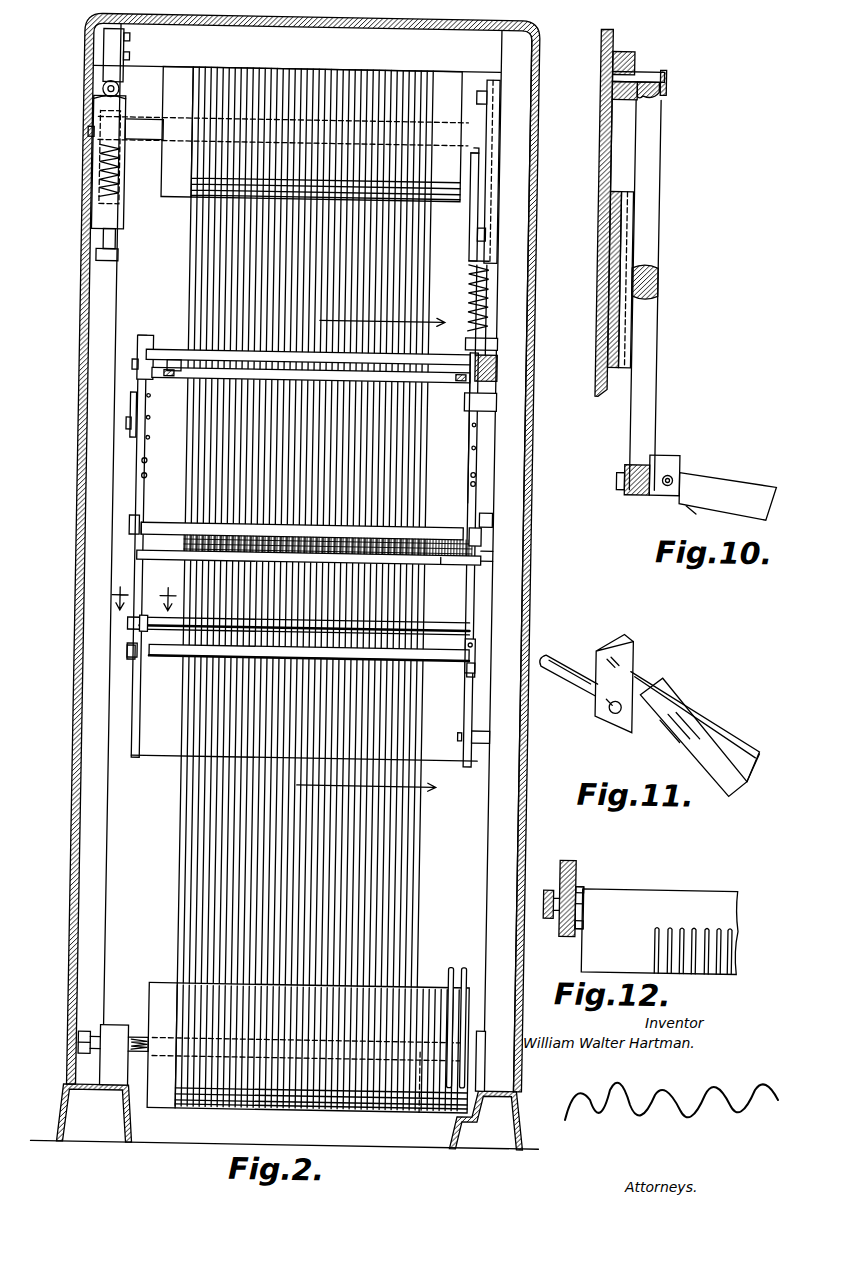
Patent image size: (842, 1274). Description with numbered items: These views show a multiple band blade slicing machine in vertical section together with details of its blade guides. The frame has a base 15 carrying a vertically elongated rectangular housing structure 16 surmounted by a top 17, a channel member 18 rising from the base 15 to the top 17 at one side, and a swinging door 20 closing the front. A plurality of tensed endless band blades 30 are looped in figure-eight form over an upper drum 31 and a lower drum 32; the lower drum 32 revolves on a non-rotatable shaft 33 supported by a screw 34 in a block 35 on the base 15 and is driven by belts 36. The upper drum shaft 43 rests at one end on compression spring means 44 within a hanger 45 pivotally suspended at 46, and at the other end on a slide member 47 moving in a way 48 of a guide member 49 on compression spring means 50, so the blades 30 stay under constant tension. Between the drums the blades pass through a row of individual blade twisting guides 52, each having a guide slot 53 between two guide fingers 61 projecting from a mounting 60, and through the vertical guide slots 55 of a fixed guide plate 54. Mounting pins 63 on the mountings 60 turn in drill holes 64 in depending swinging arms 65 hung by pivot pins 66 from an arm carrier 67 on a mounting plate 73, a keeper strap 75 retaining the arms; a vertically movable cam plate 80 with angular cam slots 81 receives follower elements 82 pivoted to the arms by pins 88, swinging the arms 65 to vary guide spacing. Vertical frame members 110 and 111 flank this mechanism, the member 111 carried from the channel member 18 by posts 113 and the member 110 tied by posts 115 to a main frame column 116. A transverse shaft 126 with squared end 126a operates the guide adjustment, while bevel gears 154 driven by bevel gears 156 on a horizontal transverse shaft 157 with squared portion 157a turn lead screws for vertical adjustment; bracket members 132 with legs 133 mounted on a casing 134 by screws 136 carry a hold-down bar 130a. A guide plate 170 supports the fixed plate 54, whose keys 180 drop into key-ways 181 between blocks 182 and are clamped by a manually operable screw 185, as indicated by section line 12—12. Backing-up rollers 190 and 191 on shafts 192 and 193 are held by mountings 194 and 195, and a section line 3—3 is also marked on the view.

In FIG. 2, the section line 3- 3 is at (378, 557).
In FIG. 2, the section line 12 is at (145, 591).
In FIG. 2, the base 15 is at (60, 1122).
In FIG. 2, the rectangular frame or housing structure 16 is at (534, 173).
In FIG. 2, the top 17 is at (531, 27).
In FIG. 2, the channel member 18 is at (505, 194).
In FIG. 2, the swinging door 20 is at (101, 522).
In FIG. 2, the tensed endless band blades 30 is at (420, 876).
In FIG. 2, the upper band blade supporting drum 31 is at (183, 75).
In FIG. 2, the lower band blade supporting drum 32 is at (174, 985).
In FIG. 2, the non-rotatable shaft 33 is at (428, 1112).
In FIG. 2, the screw 34 is at (141, 1040).
In FIG. 2, the block 35 is at (108, 1036).
In FIG. 2, the belts 36 is at (458, 965).
In FIG. 2, the drum shaft 43 is at (146, 130).
In FIG. 2, the compression spring means 44 is at (92, 174).
In FIG. 2, the hanger 45 is at (92, 187).
In FIG. 2, the pivotal suspension point 46 is at (95, 95).
In FIG. 2, the slide member 47 is at (462, 210).
In FIG. 2, the way 48 is at (492, 210).
In FIG. 2, the guide member 49 is at (480, 232).
In FIG. 2, the compression spring means 50 is at (485, 279).
In FIG. 2, the blade twisting guides 52 is at (440, 552).
In FIG. 10, the blade twisting guides 52 is at (734, 468).
In FIG. 11, the blade twisting guides 52 is at (733, 718).
In FIG. 11, the blade receiving guide slot 53 is at (678, 705).
In FIG. 2, the fixed blade guide plate 54 is at (472, 640).
In FIG. 12, the fixed blade guide plate 54 is at (688, 895).
In FIG. 12, the blade receiving guide slots 55 is at (688, 970).
In FIG. 10, the mounting 60 is at (665, 468).
In FIG. 11, the mounting 60 is at (640, 668).
In FIG. 10, the guide plates or fingers 61 is at (726, 500).
In FIG. 11, the guide plates or fingers 61 is at (715, 775).
In FIG. 10, the mounting pins 63 is at (640, 465).
In FIG. 11, the mounting pins 63 is at (572, 668).
In FIG. 10, the drill holes 64 is at (641, 492).
In FIG. 10, the swinging arms 65 is at (659, 393).
In FIG. 10, the pivot pins 66 is at (645, 72).
In FIG. 10, the supporting arm carrier 67 is at (628, 52).
In FIG. 10, the mounting plate 73 is at (597, 125).
In FIG. 10, the keeper strap 75 is at (664, 85).
In FIG. 10, the cam plate 80 is at (636, 341).
In FIG. 10, the cam slots 81 is at (625, 224).
In FIG. 10, the cam follower elements 82 is at (622, 270).
In FIG. 10, the pivot pins 88 is at (655, 286).
In FIG. 2, the vertical frame member 110 is at (132, 557).
In FIG. 12, the vertical frame member 110 is at (559, 878).
In FIG. 2, the vertical frame member 111 is at (491, 564).
In FIG. 2, the brackets or posts 113 is at (490, 740).
In FIG. 2, the posts 115 is at (118, 648).
In FIG. 2, the vertical main frame column 116 is at (128, 624).
In FIG. 2, the transverse shaft 126 is at (127, 398).
In FIG. 2, the squared end 126a is at (124, 412).
In FIG. 2, the hold-down bar 130a is at (448, 562).
In FIG. 2, the bracket members 132 is at (491, 552).
In FIG. 2, the vertically extending legs 133 is at (474, 486).
In FIG. 2, the casing 134 is at (455, 457).
In FIG. 2, the screws 136 is at (474, 481).
In FIG. 2, the bevel gears 154 is at (452, 380).
In FIG. 2, the bevel gears 156 is at (470, 352).
In FIG. 2, the horizontal transverse shaft 157 is at (168, 350).
In FIG. 2, the squared portion 157a is at (128, 366).
In FIG. 2, the guide plate 170 is at (158, 760).
In FIG. 2, the keys 180 is at (452, 630).
In FIG. 12, the keys 180 is at (583, 895).
In FIG. 12, the key-ways 181 is at (584, 905).
In FIG. 12, the blocks 182 is at (583, 928).
In FIG. 2, the manually operable screw 185 is at (128, 652).
In FIG. 12, the manually operable screw 185 is at (548, 920).
In FIG. 2, the backing-up roller 190 is at (445, 525).
In FIG. 2, the backing-up roller 191 is at (455, 660).
In FIG. 2, the shaft 192 is at (150, 527).
In FIG. 2, the shaft 193 is at (168, 658).
In FIG. 2, the mounting 194 is at (481, 538).
In FIG. 2, the mounting 195 is at (470, 676).